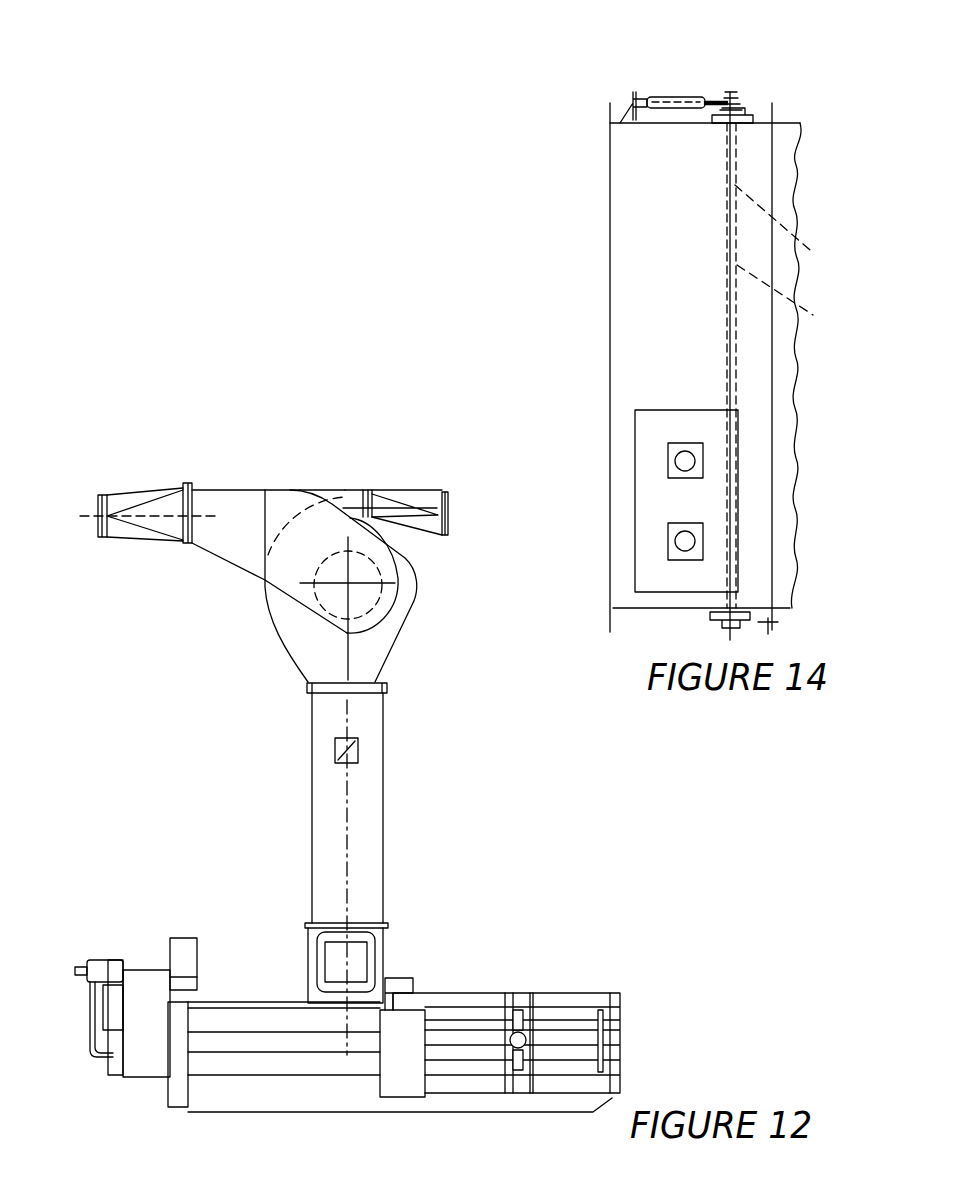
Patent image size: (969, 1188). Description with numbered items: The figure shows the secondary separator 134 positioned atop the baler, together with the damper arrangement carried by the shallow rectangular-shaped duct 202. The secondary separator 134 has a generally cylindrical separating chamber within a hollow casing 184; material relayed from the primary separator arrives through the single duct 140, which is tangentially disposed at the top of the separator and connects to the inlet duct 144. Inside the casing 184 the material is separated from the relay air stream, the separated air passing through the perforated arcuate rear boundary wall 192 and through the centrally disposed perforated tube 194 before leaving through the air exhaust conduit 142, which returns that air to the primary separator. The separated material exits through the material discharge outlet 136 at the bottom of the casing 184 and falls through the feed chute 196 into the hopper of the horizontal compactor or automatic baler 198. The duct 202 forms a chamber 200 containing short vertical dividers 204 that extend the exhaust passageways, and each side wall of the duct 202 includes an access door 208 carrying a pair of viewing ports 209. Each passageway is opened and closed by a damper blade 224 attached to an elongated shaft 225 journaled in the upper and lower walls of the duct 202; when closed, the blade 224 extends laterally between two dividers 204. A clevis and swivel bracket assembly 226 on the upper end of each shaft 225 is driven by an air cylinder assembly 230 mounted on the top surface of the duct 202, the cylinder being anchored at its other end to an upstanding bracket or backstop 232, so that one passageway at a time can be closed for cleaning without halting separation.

In FIG. 12, the secondary separator 134 is at (282, 519).
In FIG. 12, the material discharge outlet 136 is at (387, 670).
In FIG. 12, the inlet duct 140 is at (410, 500).
In FIG. 12, the air exhaust conduit 142 is at (98, 532).
In FIG. 12, the inlet duct 144 is at (345, 492).
In FIG. 12, the hollow casing 184 is at (342, 658).
In FIG. 12, the perforated arcuate rear boundary wall 192 is at (284, 512).
In FIG. 12, the perforated tube 194 is at (378, 603).
In FIG. 12, the feed chute 196 is at (372, 817).
In FIG. 12, the automatic baler 198 is at (440, 1000).
In FIG. 14, the chamber 200 is at (657, 192).
In FIG. 14, the shallow rectangular-shaped duct 202 is at (650, 150).
In FIG. 14, the vertical divider 204 is at (753, 150).
In FIG. 14, the access door 208 is at (718, 435).
In FIG. 14, the viewing port 209 is at (690, 462).
In FIG. 14, the damper blade 224 is at (795, 297).
In FIG. 14, the elongated shaft 225 is at (795, 217).
In FIG. 14, the clevis and swivel bracket assembly 226 is at (730, 100).
In FIG. 14, the air cylinder assembly 230 is at (654, 93).
In FIG. 14, the upstanding bracket or backstop 232 is at (625, 110).